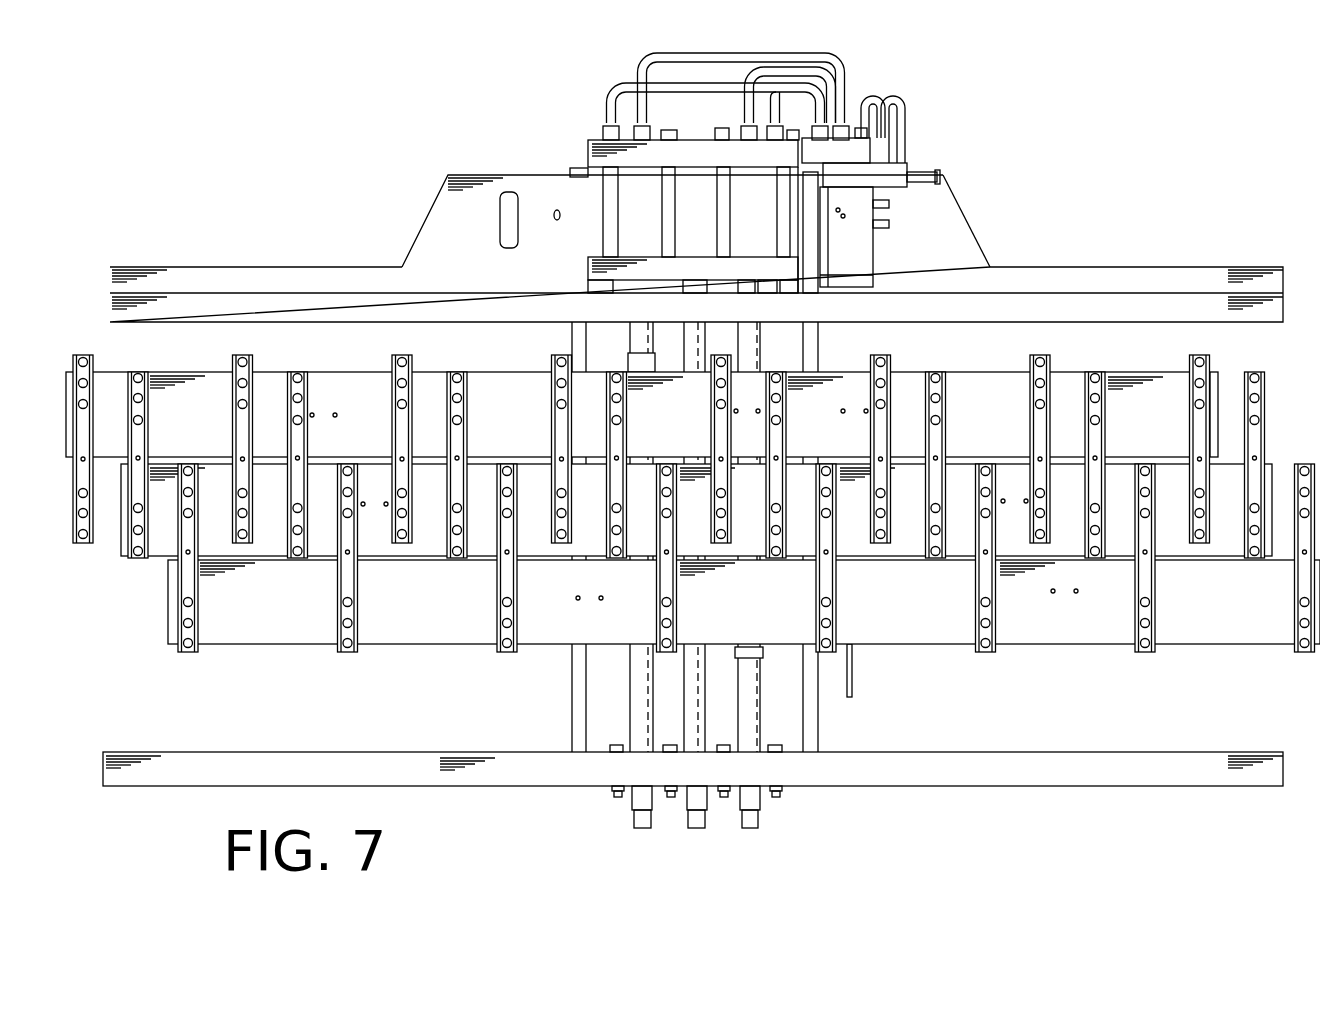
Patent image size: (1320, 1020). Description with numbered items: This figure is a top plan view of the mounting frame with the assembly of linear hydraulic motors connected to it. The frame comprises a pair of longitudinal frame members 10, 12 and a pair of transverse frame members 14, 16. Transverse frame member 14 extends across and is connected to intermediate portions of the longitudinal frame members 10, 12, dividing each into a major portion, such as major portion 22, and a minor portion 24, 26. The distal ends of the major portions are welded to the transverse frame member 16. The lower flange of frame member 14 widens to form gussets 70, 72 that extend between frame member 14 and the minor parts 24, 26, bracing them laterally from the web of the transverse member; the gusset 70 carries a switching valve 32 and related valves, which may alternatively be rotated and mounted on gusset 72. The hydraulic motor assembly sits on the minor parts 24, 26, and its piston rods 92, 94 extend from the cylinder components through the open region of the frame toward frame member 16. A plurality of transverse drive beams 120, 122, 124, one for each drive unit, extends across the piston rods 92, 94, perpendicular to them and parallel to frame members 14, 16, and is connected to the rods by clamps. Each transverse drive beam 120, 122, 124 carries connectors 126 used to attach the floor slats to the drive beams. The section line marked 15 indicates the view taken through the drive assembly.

The longitudinal frame member 10 is at (385, 215).
The longitudinal frame member 12 is at (565, 707).
The transverse frame member 14 is at (216, 286).
The section line 15- 15 is at (722, 28).
The transverse frame member 16 is at (492, 788).
The major portion 22 is at (572, 665).
The minor portion 24 is at (812, 225).
The minor portion 26 is at (608, 215).
The switching valve 32 is at (870, 257).
The gusset 70 is at (948, 200).
The gusset 72 is at (466, 205).
The piston rod 92 is at (637, 818).
The piston rod 94 is at (700, 822).
The transverse drive beam 120 is at (366, 401).
The transverse drive beam 122 is at (222, 535).
The transverse drive beam 124 is at (448, 624).
The connectors 126 is at (137, 442).